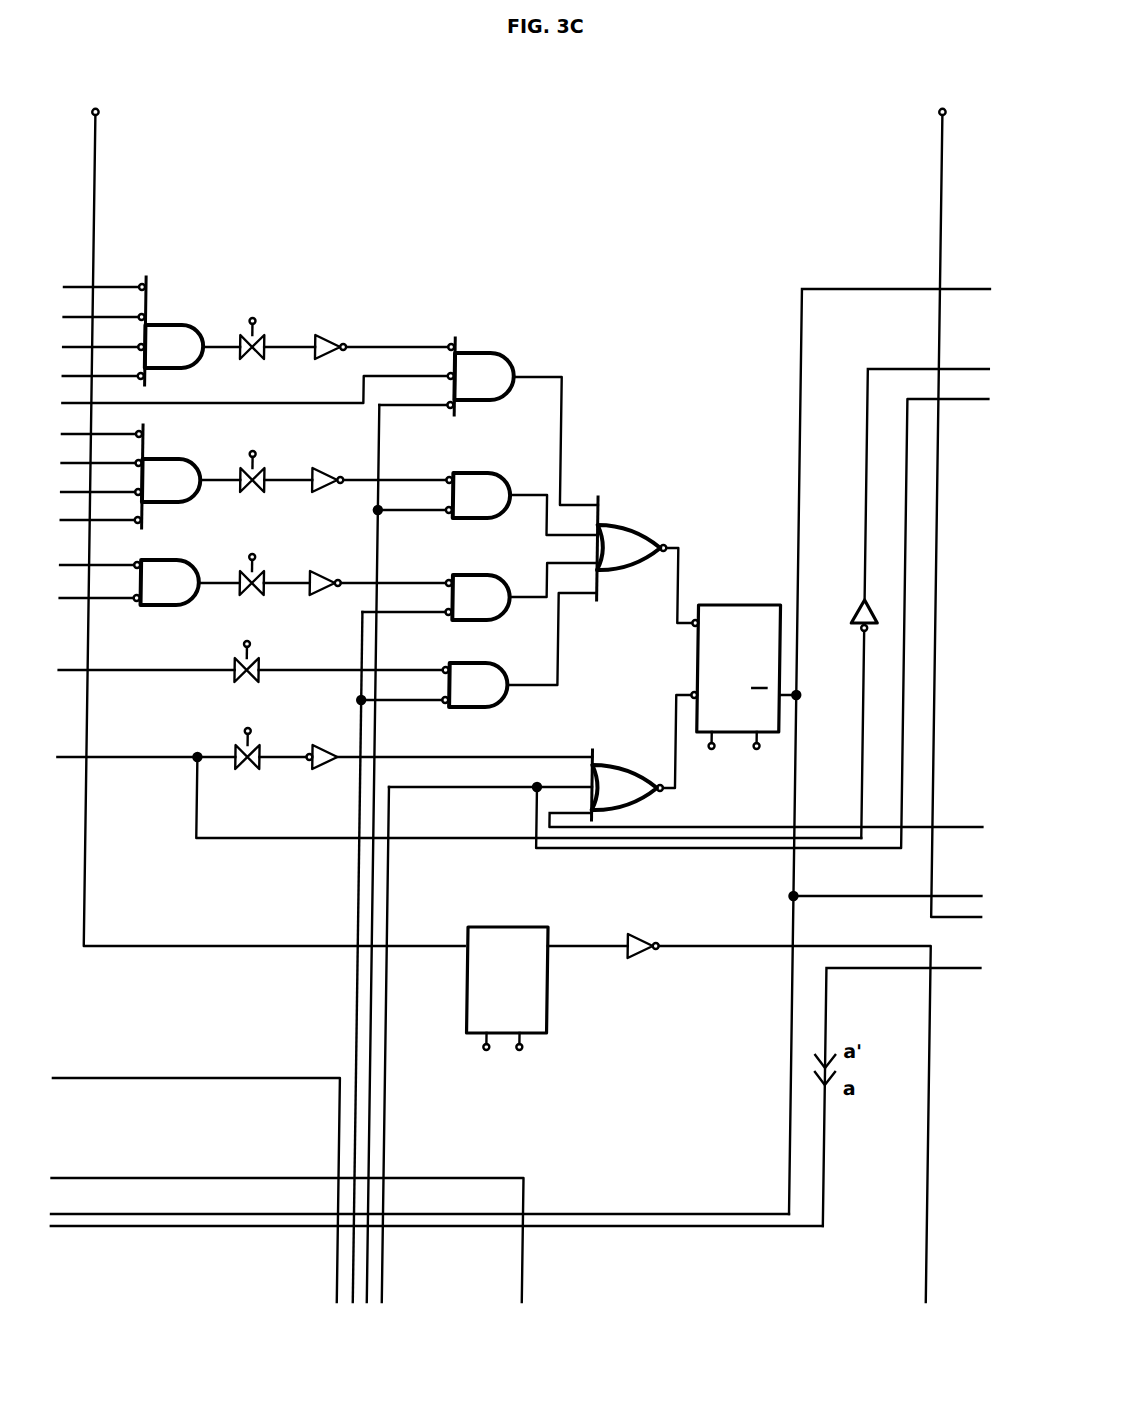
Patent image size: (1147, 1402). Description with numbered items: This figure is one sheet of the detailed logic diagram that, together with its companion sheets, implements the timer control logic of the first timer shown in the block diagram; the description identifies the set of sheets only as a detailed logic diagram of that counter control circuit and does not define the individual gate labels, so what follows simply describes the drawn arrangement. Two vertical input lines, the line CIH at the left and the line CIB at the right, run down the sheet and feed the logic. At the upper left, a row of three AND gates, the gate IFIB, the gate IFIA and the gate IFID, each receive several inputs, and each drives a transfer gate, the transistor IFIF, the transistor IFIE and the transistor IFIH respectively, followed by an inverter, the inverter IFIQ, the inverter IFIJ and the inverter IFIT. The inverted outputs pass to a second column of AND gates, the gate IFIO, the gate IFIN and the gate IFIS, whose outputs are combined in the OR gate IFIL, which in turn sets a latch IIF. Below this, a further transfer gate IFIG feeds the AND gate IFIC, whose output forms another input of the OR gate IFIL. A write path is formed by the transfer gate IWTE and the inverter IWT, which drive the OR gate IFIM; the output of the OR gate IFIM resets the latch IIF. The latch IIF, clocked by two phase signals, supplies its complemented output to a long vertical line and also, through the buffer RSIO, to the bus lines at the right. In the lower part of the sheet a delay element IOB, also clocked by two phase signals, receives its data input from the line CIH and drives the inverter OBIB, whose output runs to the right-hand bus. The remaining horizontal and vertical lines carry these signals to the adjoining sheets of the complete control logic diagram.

The input bus line CIH is at (270, 506).
The input bus line CIB is at (951, 499).
The AND gate IFIB is at (134, 326).
The transfer gate transistor IFIF is at (258, 341).
The inverter IFIQ is at (337, 329).
The AND gate IFIO is at (487, 368).
The AND gate IFIA is at (131, 470).
The transfer gate transistor IFIE is at (258, 471).
The inverter IFIJ is at (336, 462).
The AND gate IFIN is at (483, 480).
The AND gate IFID is at (130, 569).
The transfer gate transistor IFIH is at (257, 575).
The inverter IFIT is at (336, 564).
The AND gate IFIS is at (482, 585).
The OR gate IFIL is at (642, 541).
The transfer gate transistor IFIG is at (248, 658).
The AND gate IFIC is at (483, 671).
The transfer gate transistor IWTE is at (251, 752).
The inverter IWT is at (359, 743).
The OR gate IFIM is at (624, 777).
The latch IIF is at (735, 681).
The buffer RSIO is at (896, 603).
The delay flip-flop IOB is at (483, 1001).
The inverter OBIB is at (643, 927).